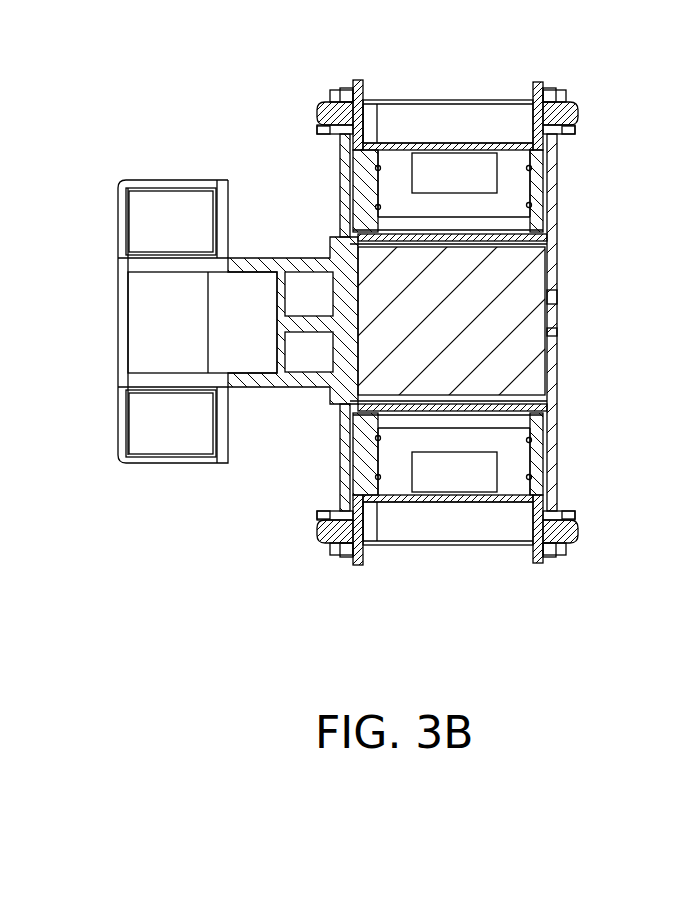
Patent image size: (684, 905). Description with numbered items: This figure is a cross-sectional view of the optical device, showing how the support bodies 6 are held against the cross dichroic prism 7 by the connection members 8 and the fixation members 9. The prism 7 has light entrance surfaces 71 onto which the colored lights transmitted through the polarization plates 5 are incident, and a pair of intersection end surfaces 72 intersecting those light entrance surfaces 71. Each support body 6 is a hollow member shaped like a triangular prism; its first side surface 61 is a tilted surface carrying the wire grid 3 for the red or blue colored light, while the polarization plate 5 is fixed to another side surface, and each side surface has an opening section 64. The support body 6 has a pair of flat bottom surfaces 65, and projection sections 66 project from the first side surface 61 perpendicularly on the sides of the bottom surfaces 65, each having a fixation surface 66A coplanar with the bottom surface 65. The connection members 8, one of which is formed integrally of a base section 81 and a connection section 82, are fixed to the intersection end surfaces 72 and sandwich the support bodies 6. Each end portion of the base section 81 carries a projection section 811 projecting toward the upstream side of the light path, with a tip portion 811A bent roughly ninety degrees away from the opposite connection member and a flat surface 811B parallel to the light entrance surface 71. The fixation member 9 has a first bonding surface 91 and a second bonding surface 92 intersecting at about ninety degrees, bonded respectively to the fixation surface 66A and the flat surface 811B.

The wire grid 3 is at (437, 142).
The polarization plate 5 is at (440, 222).
The support body 6 is at (548, 210).
The cross dichroic prism 7 is at (535, 355).
The connection member 8 is at (133, 265).
The fixation member 9 is at (315, 105).
The first side surface 61 is at (372, 113).
The opening section 64 is at (528, 205).
The bottom surface 65 is at (353, 215).
The projection section 66 is at (360, 82).
The fixation surface 66A is at (343, 88).
The light entrance surface 71 is at (410, 246).
The intersection end surface 72 is at (358, 288).
The base section 81 is at (343, 350).
The connection section 82 is at (127, 352).
The first bonding surface 91 is at (363, 120).
The second bonding surface 92 is at (317, 132).
The projection section 811 is at (338, 188).
The tip portion 811A is at (317, 128).
The flat surface 811B is at (317, 103).